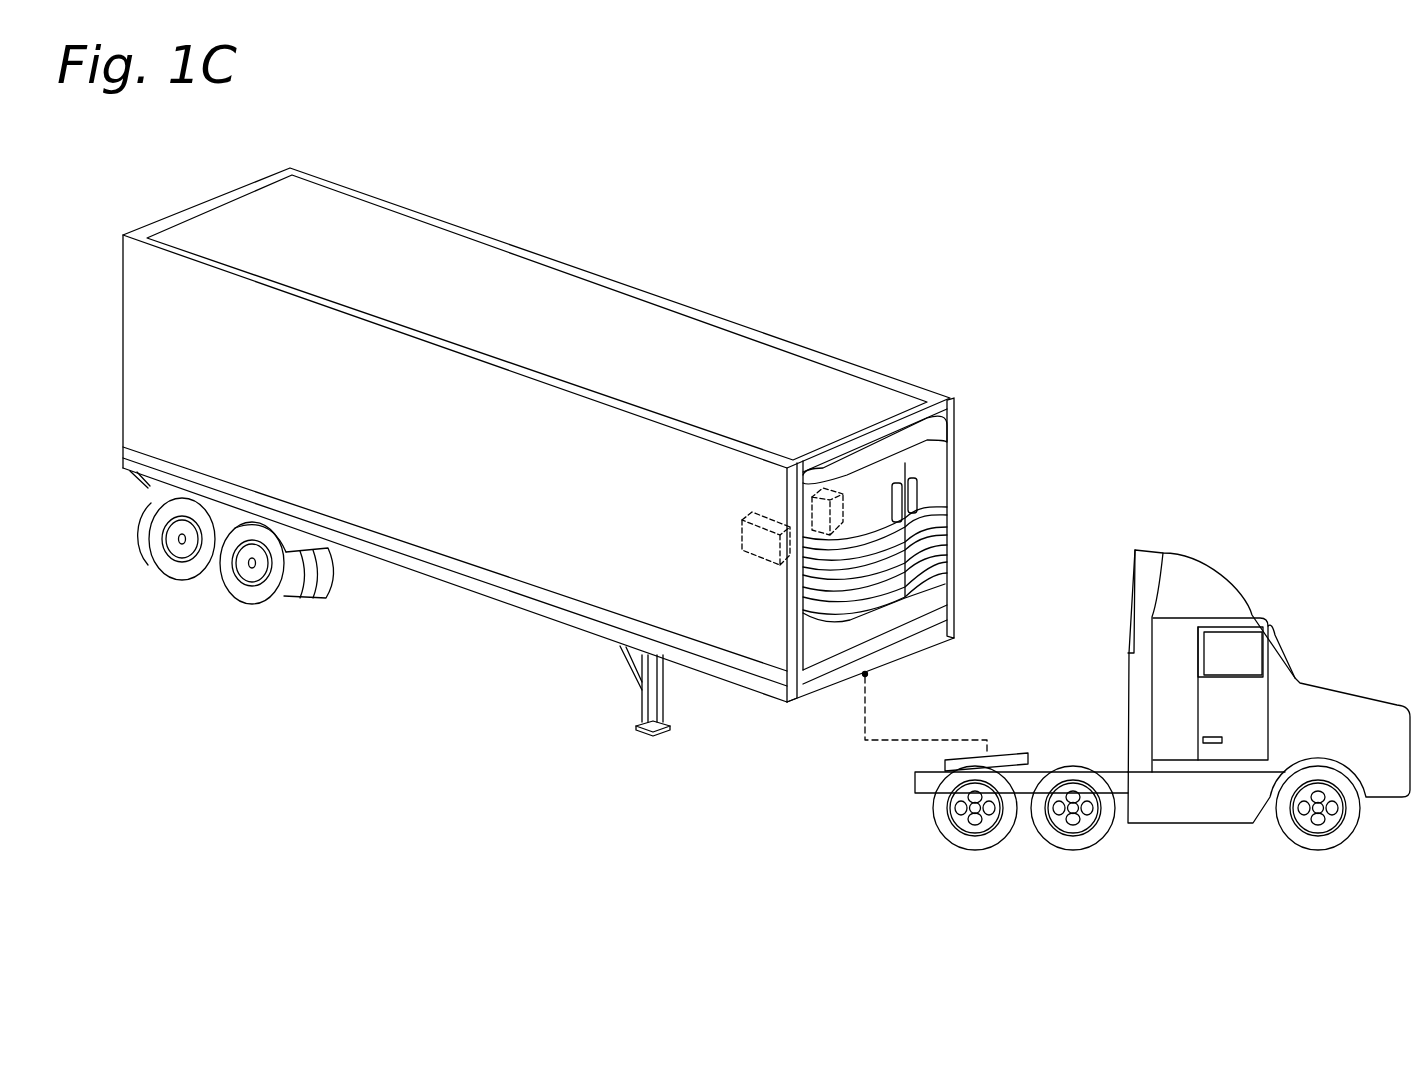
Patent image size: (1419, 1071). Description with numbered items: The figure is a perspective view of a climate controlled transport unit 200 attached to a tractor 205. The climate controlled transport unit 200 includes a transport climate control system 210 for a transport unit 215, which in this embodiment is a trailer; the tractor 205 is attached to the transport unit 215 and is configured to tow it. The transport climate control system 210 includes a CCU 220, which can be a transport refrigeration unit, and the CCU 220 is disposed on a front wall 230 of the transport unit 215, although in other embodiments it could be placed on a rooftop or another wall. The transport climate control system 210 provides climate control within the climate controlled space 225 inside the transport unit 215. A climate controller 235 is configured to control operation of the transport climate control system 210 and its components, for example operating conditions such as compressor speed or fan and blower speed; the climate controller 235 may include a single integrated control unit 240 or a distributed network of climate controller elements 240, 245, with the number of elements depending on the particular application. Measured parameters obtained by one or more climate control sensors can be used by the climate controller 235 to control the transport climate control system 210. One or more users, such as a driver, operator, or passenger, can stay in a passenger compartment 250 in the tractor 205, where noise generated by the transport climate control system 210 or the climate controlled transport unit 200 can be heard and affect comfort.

The climate controlled transport unit 200 is at (575, 216).
The tractor 205 is at (1330, 687).
The transport climate control system 210 is at (1019, 265).
The transport unit 215 is at (683, 303).
The CCU 220 is at (937, 465).
The climate controlled space 225 is at (540, 525).
The front wall 230 is at (930, 417).
The climate controller 235 is at (737, 630).
The integrated control unit 240 is at (838, 535).
The climate controller element 245 is at (742, 533).
The passenger compartment 250 is at (1242, 645).